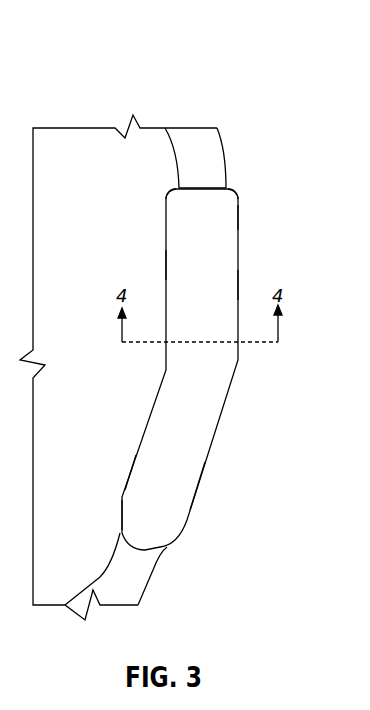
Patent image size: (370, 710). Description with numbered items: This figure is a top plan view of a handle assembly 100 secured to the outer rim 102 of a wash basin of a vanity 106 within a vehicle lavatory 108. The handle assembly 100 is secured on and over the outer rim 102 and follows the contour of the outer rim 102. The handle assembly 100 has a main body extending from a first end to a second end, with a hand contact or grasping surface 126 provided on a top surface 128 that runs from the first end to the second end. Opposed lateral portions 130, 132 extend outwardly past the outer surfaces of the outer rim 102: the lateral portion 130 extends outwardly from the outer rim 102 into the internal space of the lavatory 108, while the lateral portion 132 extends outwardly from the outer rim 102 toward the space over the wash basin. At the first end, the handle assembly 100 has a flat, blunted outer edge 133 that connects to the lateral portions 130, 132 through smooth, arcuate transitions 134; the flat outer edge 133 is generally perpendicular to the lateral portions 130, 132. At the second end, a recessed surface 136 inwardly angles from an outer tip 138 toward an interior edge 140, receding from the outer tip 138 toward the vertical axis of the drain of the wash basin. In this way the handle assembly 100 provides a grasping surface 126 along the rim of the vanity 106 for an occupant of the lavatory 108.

The vehicle lavatory 108 is at (110, 60).
The vanity 106 is at (150, 142).
The outer rim 102 is at (207, 148).
The flat outer edge 133 is at (198, 188).
The arcuate transitions 134 is at (235, 193).
The lateral portion 130 is at (240, 215).
The handle assembly 100 is at (238, 253).
The grasping surface 126 is at (217, 288).
The lateral portion 132 is at (166, 262).
The interior edge 140 is at (127, 470).
The recessed surface 136 is at (121, 512).
The top surface 128 is at (187, 467).
The outer tip 138 is at (142, 552).